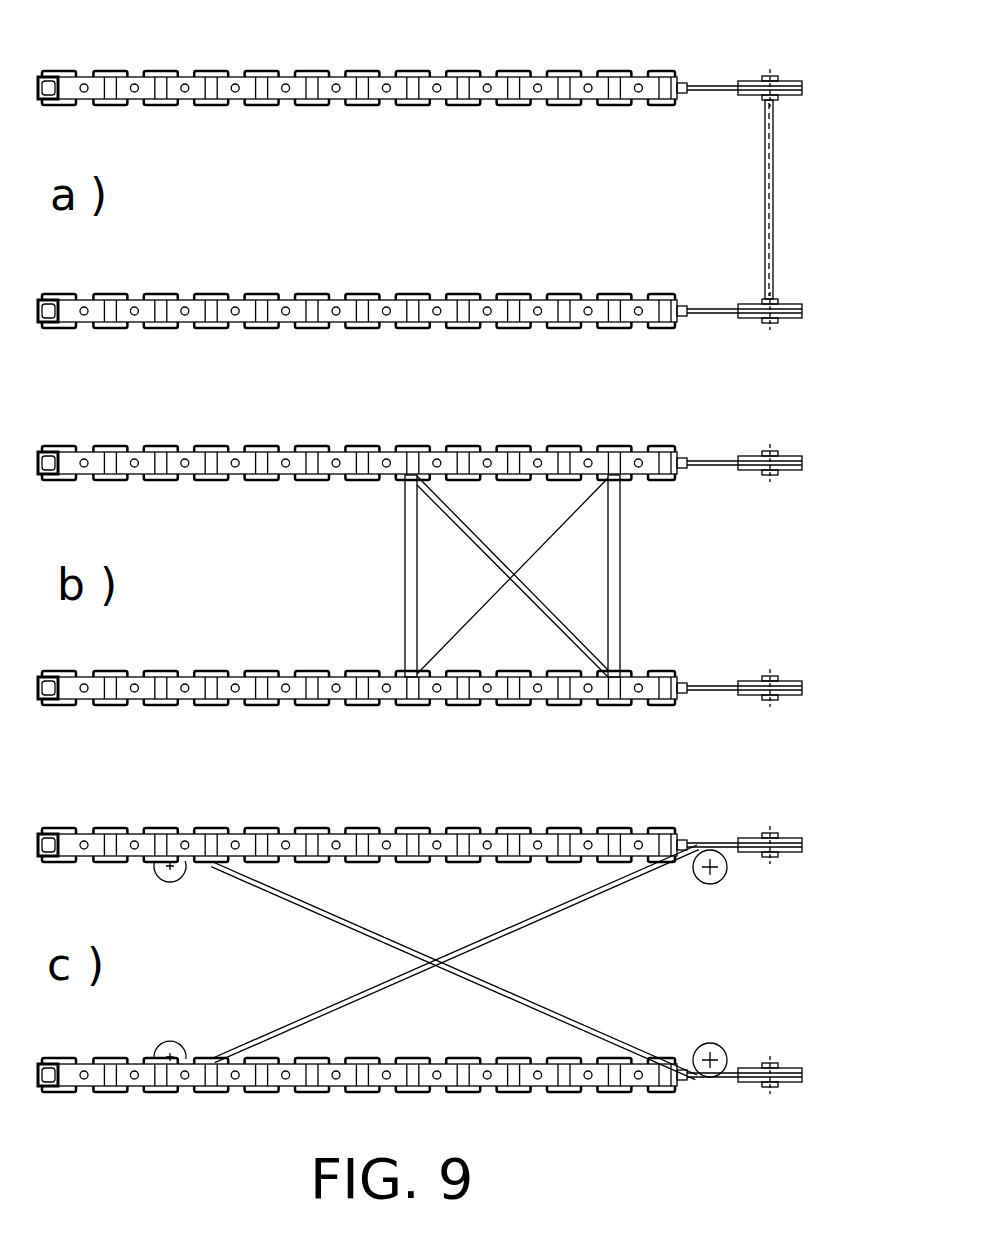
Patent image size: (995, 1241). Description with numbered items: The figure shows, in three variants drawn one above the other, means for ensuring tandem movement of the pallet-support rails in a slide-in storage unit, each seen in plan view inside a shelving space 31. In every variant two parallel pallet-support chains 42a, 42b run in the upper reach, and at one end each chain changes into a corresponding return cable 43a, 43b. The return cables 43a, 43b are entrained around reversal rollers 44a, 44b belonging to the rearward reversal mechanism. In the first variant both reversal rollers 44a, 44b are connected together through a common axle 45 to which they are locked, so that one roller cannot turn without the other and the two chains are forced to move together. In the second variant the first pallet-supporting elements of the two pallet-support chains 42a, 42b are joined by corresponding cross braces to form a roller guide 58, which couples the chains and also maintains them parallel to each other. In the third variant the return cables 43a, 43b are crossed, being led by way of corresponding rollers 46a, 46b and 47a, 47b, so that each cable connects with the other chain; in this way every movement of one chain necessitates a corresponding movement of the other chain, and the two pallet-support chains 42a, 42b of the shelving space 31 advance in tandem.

The shelving space 31 is at (232, 223).
The pallet-support chain 42a is at (350, 95).
The pallet-support chain 42b is at (343, 303).
The return cable 43a is at (727, 87).
The return cable 43b is at (713, 308).
The reversal roller 44a is at (762, 81).
The reversal roller 44b is at (750, 322).
The common axle 45 is at (775, 217).
The roller guide 58 is at (467, 525).
The roller 46a is at (712, 862).
The roller 46b is at (708, 1077).
The roller 47a is at (180, 868).
The roller 47b is at (173, 1043).